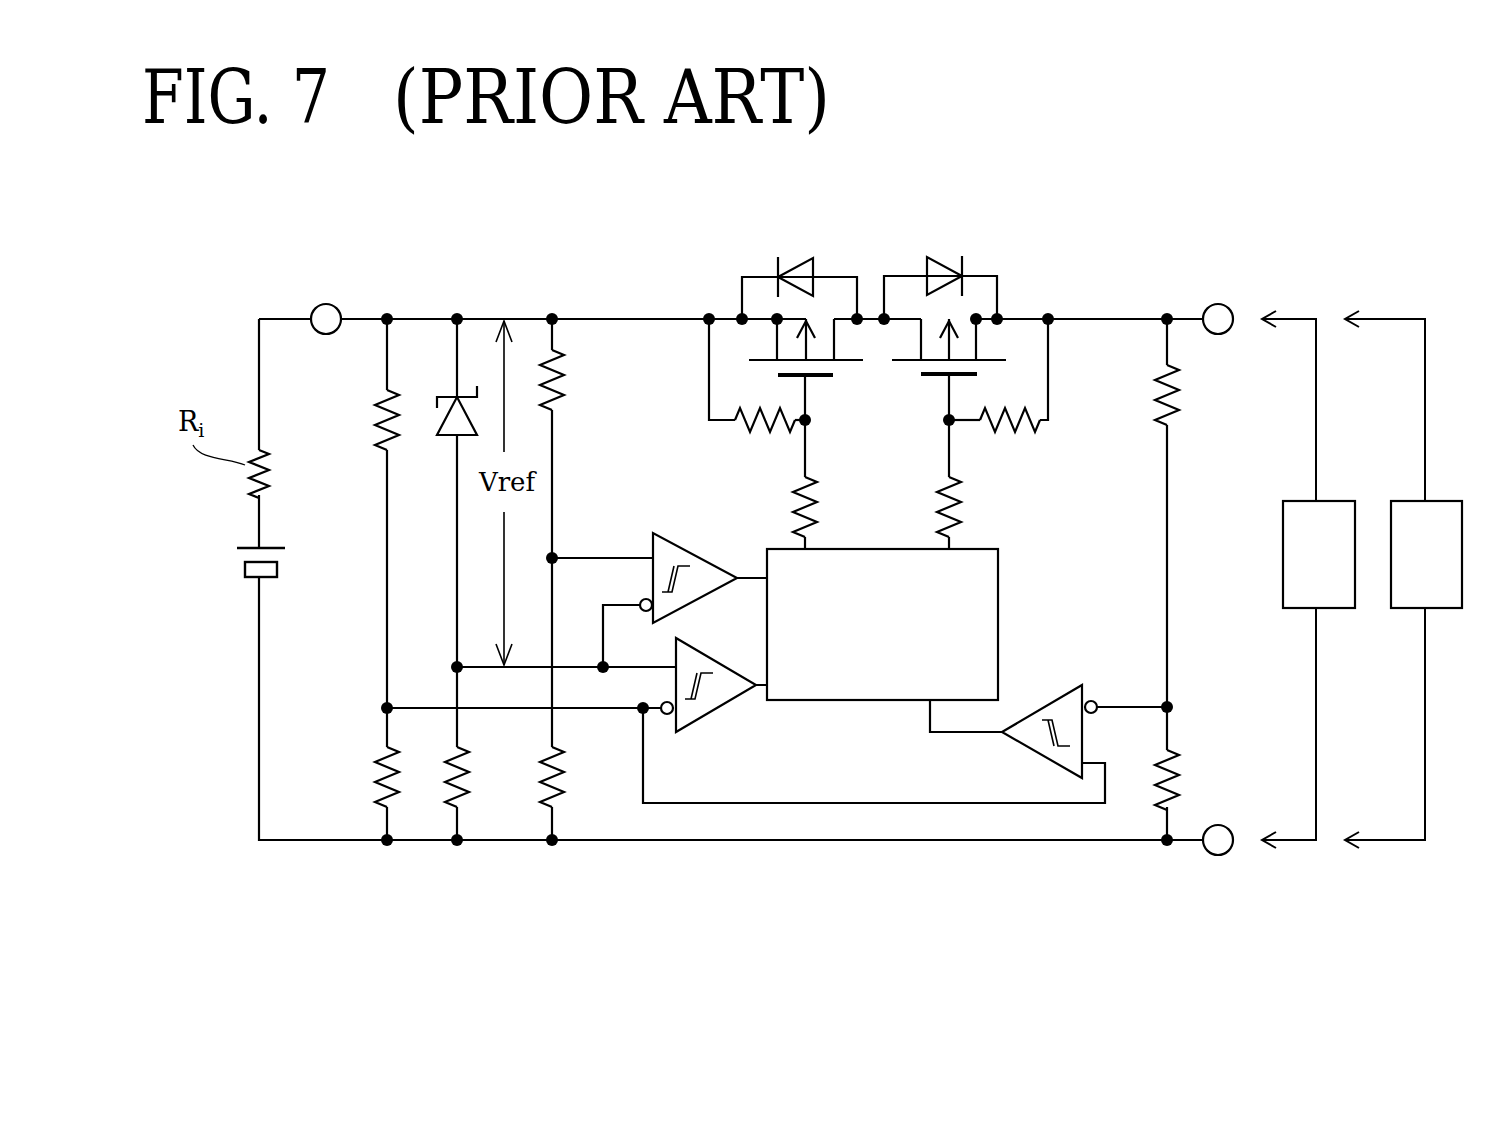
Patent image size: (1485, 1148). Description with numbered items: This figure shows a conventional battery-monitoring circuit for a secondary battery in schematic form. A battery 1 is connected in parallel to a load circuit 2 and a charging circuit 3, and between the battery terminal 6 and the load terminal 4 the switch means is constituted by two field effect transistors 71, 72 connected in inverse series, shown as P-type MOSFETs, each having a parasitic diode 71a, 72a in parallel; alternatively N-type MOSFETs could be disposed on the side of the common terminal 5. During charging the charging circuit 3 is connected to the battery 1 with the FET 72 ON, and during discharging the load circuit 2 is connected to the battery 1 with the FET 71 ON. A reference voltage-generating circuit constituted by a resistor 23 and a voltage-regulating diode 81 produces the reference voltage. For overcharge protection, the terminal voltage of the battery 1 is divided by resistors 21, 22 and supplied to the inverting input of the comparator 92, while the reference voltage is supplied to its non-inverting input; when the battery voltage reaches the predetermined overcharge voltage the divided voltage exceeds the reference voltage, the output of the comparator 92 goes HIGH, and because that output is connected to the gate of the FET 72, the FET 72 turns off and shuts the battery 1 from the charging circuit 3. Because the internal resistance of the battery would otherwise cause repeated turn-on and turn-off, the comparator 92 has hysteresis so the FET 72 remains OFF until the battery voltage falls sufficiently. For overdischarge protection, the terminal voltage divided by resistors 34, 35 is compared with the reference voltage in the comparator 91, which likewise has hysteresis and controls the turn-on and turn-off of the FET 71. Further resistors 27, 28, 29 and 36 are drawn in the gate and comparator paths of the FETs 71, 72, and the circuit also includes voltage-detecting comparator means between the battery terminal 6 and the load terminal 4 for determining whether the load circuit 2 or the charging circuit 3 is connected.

The battery 1 is at (240, 548).
The load circuit 2 is at (1308, 579).
The charging circuit 3 is at (1403, 579).
The load terminal 4 is at (1218, 303).
The common terminal 5 is at (1220, 856).
The battery terminal 6 is at (330, 303).
The resistor 21 is at (377, 412).
The resistor 22 is at (375, 775).
The resistor 23 is at (470, 785).
The gate resistor 27 is at (755, 440).
The gate resistor 28 is at (1020, 432).
The resistor 29 is at (968, 493).
The resistor 34 is at (565, 787).
The resistor 35 is at (572, 375).
The resistor 36 is at (822, 510).
The field effect transistor 71 is at (840, 370).
The parasitic diode 71a is at (813, 258).
The field effect transistor 72 is at (980, 368).
The parasitic diode 72a is at (940, 257).
The voltage-regulating diode 81 is at (447, 432).
The comparator 91 is at (690, 548).
The comparator 92 is at (723, 700).